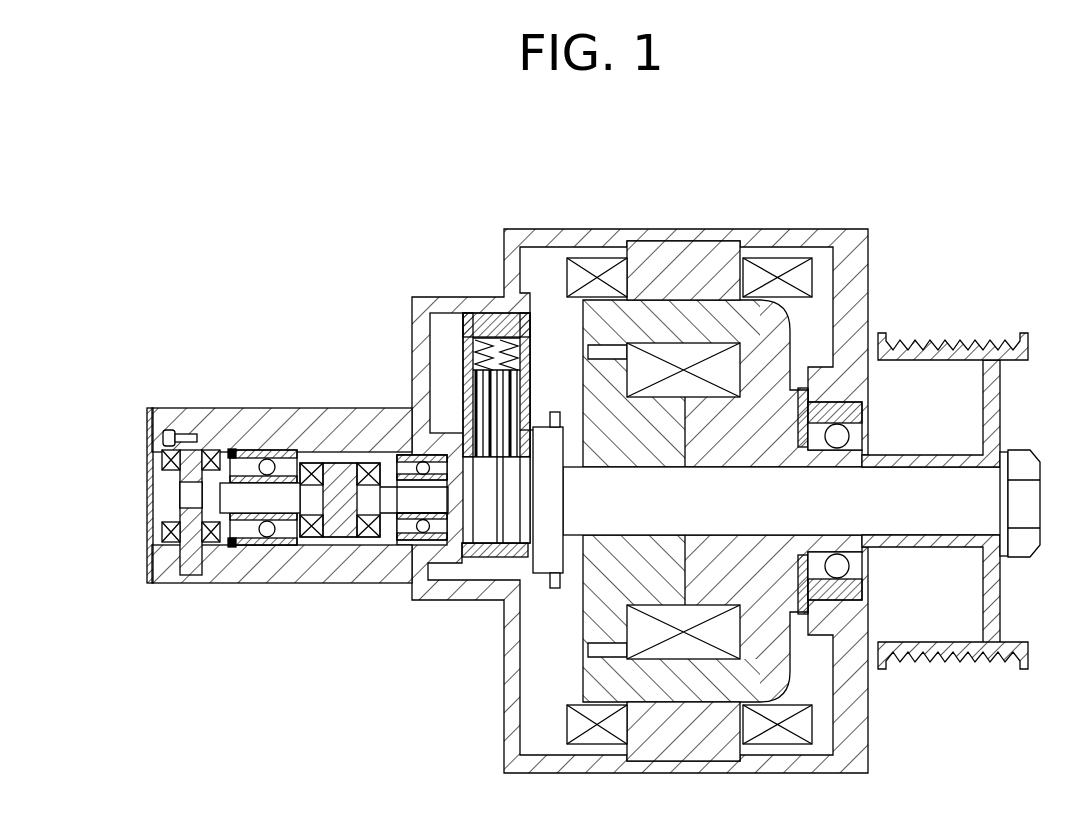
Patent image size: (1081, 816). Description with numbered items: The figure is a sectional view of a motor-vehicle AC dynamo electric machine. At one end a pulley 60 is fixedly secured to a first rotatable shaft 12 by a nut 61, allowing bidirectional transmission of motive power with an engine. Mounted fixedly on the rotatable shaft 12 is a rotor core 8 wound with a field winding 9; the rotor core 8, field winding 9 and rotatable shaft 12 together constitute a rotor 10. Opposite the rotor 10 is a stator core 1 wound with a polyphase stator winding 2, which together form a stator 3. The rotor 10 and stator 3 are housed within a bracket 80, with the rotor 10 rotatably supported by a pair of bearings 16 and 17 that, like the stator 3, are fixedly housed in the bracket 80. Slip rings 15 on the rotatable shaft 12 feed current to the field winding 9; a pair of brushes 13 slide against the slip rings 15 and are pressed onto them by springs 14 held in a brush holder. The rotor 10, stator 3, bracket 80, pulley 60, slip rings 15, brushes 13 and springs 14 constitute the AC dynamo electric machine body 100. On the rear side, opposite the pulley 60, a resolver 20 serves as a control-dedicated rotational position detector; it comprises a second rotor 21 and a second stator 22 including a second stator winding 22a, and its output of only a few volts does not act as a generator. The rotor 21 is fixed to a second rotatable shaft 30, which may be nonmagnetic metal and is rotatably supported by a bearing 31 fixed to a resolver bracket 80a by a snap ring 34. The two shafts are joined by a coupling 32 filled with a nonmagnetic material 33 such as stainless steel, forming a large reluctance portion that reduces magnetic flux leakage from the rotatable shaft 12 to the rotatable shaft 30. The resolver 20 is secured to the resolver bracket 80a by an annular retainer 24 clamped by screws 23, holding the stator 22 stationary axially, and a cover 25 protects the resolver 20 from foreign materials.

The stator core 1 is at (719, 249).
The polyphase stator winding 2 is at (803, 262).
The stator 3 is at (740, 182).
The rotor core 8 is at (777, 333).
The field winding 9 is at (730, 373).
The rotor 10 is at (925, 232).
The rotatable shaft 12 is at (947, 483).
The brushes 13 is at (513, 430).
The springs 14 is at (513, 330).
The slip rings 15 is at (515, 527).
The bearing 16 is at (857, 434).
The bearing 17 is at (407, 530).
The resolver 20 is at (80, 400).
The rotor 21 is at (190, 497).
The stator 22 is at (173, 482).
The stator winding 22a is at (160, 457).
The screw 23 is at (162, 440).
The retainer 24 is at (190, 447).
The cover 25 is at (143, 510).
The rotatable shaft 30 is at (192, 563).
The bearing 31 is at (283, 465).
The coupling 32 is at (368, 520).
The nonmagnetic material 33 is at (343, 483).
The snap ring 34 is at (232, 548).
The pulley 60 is at (1028, 337).
The nut 61 is at (1022, 555).
The bracket 80 is at (867, 240).
The resolver bracket 80a is at (277, 570).
The AC dynamo electric machine body 100 is at (592, 238).